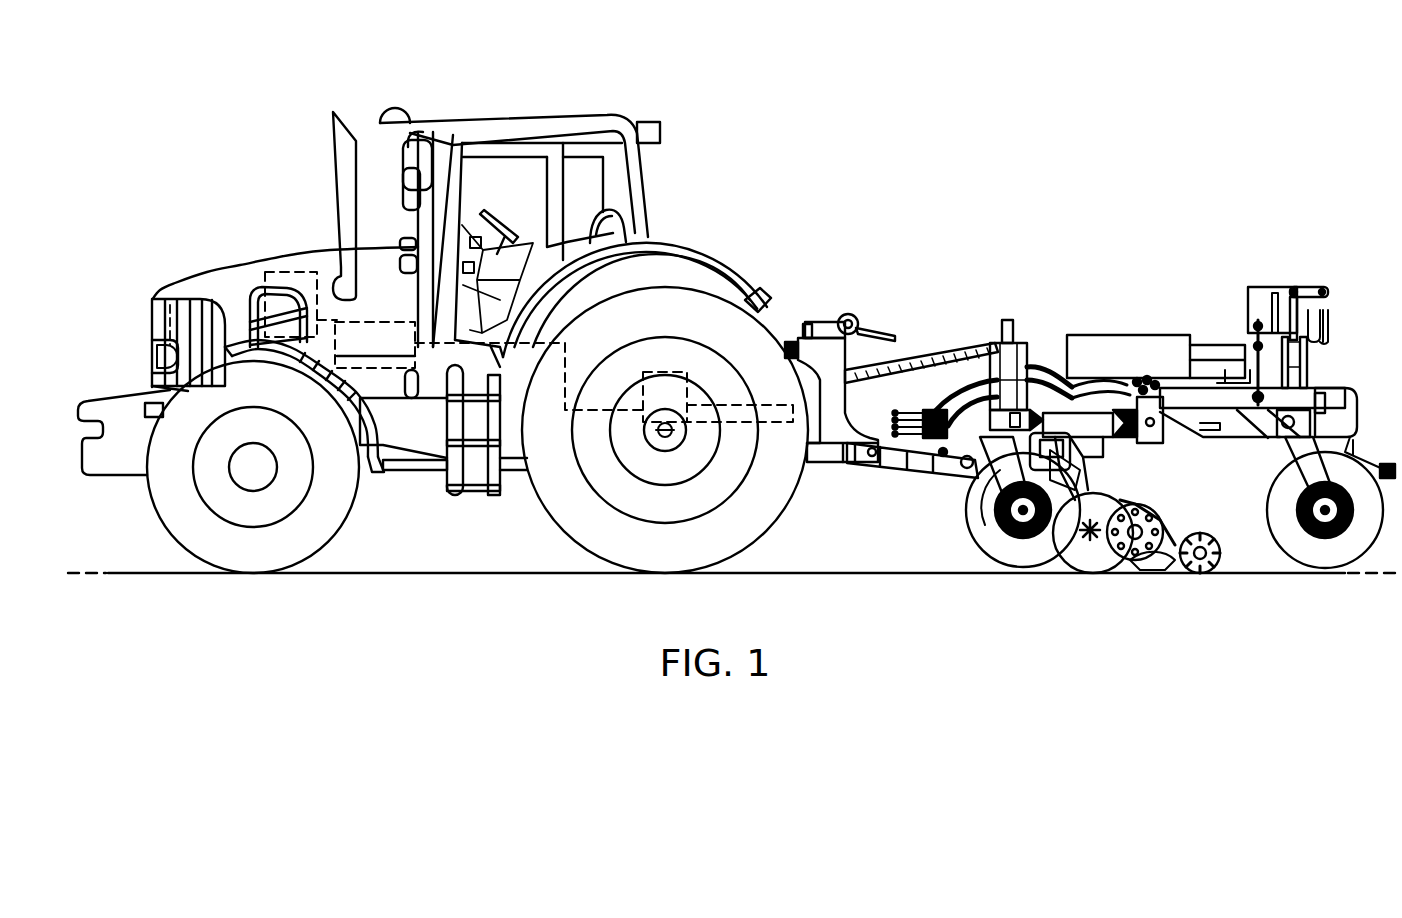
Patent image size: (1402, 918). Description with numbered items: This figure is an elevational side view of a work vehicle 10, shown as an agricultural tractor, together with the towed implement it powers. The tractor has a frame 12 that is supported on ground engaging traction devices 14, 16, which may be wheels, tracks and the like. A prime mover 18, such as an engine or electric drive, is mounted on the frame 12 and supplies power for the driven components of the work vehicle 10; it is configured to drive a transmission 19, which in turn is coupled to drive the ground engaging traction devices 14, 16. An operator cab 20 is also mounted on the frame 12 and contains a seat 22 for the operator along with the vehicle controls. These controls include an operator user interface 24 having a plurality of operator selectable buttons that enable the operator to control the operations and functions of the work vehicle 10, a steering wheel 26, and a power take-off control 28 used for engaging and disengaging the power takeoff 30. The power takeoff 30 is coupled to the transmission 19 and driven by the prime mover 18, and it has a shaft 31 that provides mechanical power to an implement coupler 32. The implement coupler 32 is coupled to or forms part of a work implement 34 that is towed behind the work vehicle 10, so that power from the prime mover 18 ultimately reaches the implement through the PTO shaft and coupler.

The work vehicle 10 is at (725, 111).
The frame 12 is at (396, 438).
The ground engaging traction device 14 is at (180, 524).
The ground engaging traction device 16 is at (750, 520).
The prime mover 18 is at (283, 270).
The transmission 19 is at (340, 262).
The operator cab 20 is at (604, 121).
The seat 22 is at (612, 222).
The operator user interface 24 is at (465, 258).
The steering wheel 26 is at (503, 232).
The power take-off control 28 is at (470, 236).
The power takeoff (PTO) 30 is at (640, 398).
The shaft 31 is at (745, 425).
The implement coupler 32 is at (822, 313).
The work implement 34 is at (1006, 315).